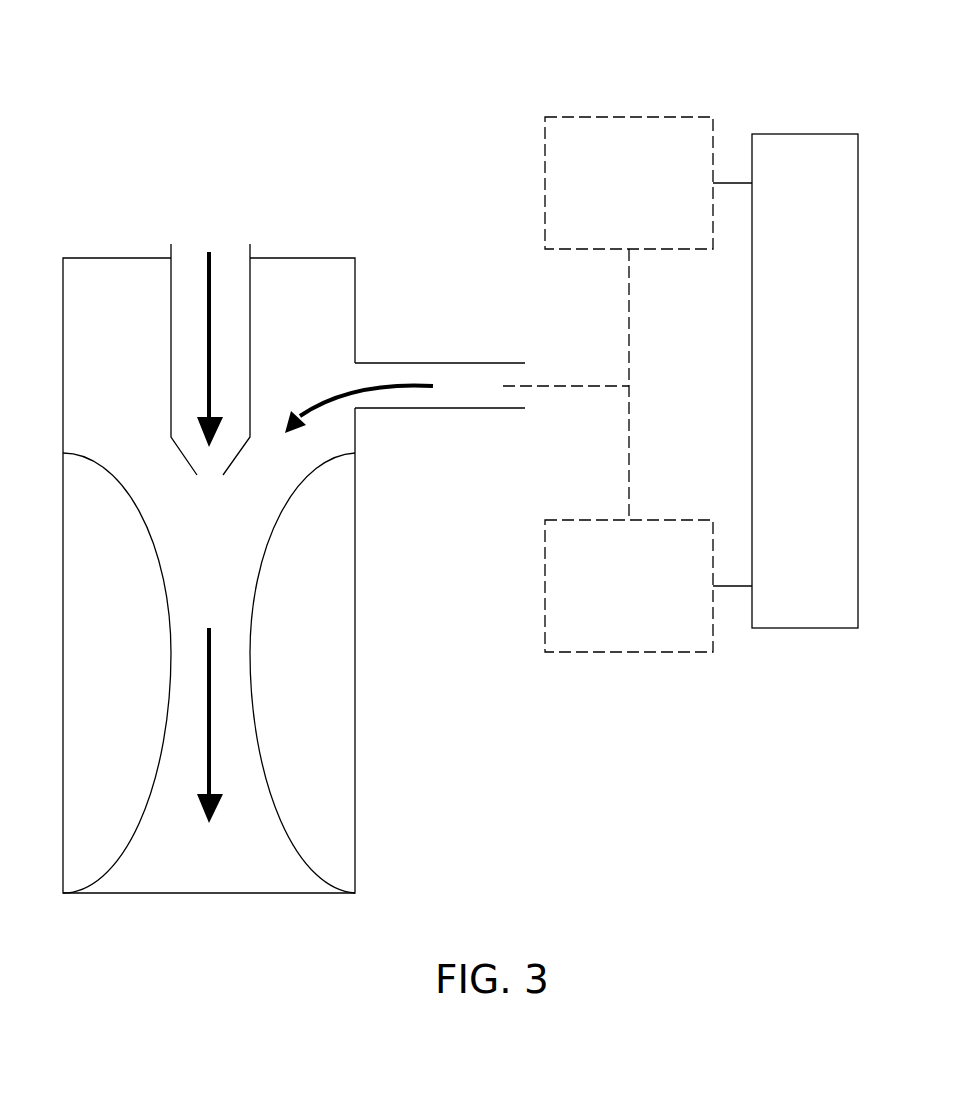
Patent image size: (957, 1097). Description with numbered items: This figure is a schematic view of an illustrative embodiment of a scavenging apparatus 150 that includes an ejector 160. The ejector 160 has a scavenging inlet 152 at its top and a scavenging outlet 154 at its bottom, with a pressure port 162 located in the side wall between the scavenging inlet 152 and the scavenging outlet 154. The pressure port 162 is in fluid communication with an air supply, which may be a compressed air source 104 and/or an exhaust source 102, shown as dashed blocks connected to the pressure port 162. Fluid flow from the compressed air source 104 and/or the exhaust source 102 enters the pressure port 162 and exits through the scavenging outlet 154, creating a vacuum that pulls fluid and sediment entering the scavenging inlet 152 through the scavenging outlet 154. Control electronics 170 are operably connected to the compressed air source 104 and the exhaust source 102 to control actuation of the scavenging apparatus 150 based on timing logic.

The scavenging apparatus 150 is at (330, 54).
The scavenging inlet 152 is at (233, 257).
The scavenging outlet 154 is at (240, 875).
The ejector 160 is at (362, 661).
The pressure port 162 is at (488, 380).
The exhaust source 102 is at (637, 116).
The compressed air source 104 is at (618, 653).
The control electronics 170 is at (802, 128).